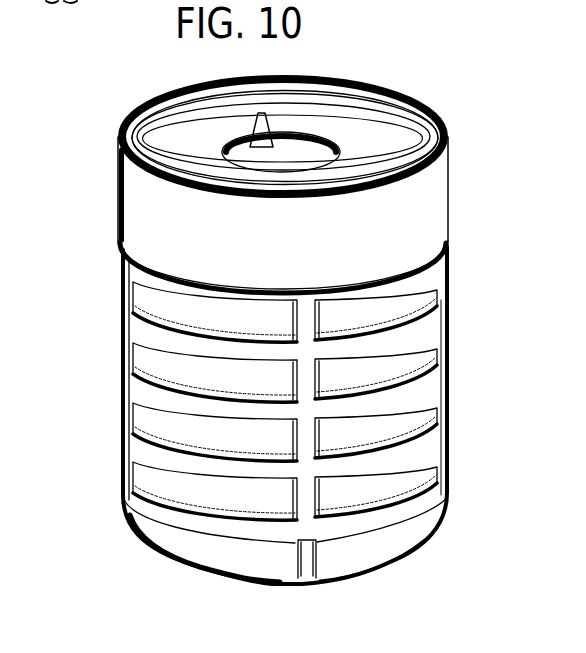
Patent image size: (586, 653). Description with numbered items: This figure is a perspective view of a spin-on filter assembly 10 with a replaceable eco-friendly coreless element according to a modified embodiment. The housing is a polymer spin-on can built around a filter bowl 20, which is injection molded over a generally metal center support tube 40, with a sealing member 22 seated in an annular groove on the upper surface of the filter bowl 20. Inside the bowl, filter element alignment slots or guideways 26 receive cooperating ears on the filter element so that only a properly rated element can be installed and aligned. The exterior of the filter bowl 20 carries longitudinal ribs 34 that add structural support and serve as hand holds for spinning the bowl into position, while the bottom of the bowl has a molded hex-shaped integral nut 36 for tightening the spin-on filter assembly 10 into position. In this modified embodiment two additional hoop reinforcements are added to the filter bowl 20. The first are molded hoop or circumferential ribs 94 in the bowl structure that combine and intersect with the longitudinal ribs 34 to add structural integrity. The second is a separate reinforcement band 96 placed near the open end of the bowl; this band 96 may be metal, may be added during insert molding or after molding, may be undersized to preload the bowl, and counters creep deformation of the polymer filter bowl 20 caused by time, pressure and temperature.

The spin-on filter assembly 10 is at (72, 118).
The filter bowl 20 is at (421, 468).
The sealing member 22 is at (428, 102).
The filter element alignment slots 26 is at (248, 133).
The longitudinal ribs 34 is at (122, 413).
The hex-shaped integral nut 36 is at (258, 584).
The center support tube 40 is at (312, 158).
The circumferential ribs 94 is at (440, 311).
The reinforcement band 96 is at (425, 198).